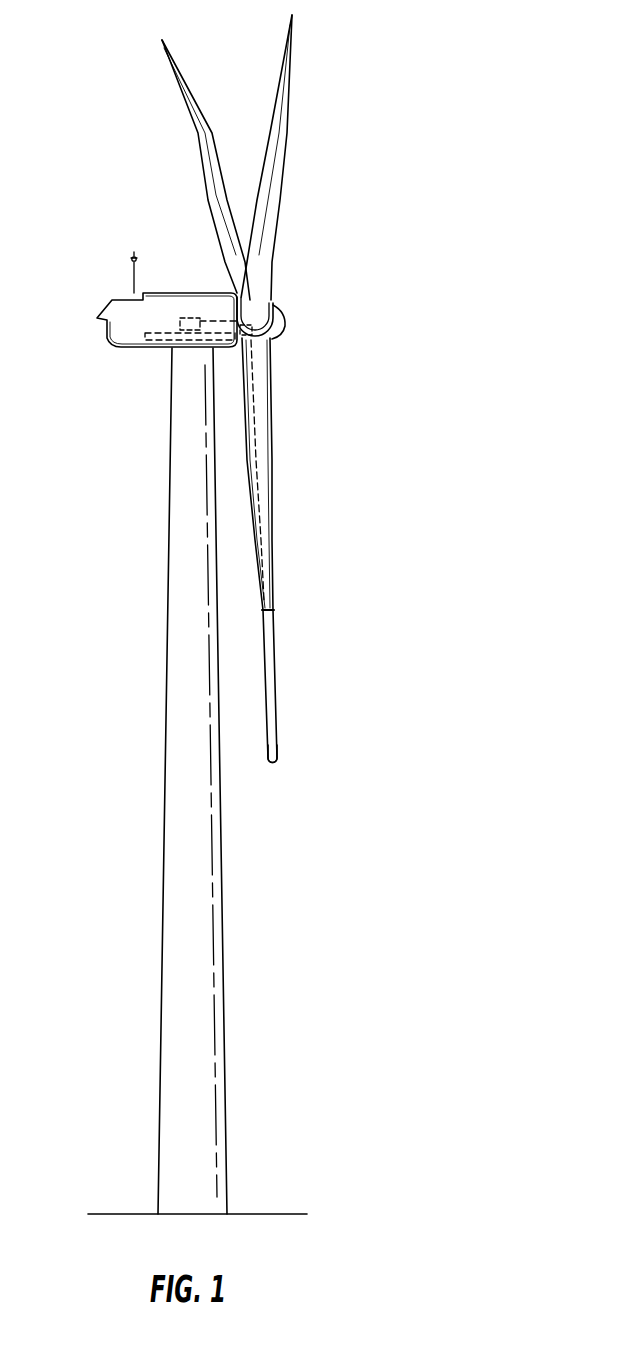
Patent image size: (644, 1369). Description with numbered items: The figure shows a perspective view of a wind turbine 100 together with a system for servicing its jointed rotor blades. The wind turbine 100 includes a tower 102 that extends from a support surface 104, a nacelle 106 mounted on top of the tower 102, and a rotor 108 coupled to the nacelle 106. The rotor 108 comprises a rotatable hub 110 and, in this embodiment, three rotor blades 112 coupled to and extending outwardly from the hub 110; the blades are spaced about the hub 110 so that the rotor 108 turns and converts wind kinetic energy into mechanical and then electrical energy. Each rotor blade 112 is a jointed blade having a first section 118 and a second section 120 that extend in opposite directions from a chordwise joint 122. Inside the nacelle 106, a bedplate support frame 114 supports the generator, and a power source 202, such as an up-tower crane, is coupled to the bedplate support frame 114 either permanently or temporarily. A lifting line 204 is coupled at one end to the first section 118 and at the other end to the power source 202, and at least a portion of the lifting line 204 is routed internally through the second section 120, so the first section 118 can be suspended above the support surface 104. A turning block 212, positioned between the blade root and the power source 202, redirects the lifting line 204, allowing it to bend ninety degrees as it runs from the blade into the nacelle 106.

The wind turbine 100 is at (432, 116).
The tower 102 is at (201, 858).
The support surface 104 is at (133, 1213).
The nacelle 106 is at (143, 350).
The rotor 108 is at (310, 259).
The rotatable hub 110 is at (284, 318).
The rotor blade 112 is at (275, 137).
The bedplate support frame 114 is at (159, 349).
The first section 118 is at (274, 746).
The second section 120 is at (258, 377).
The chordwise joint 122 is at (284, 606).
The power source 202 is at (191, 318).
The lifting line 204 is at (272, 425).
The turning block 212 is at (258, 330).